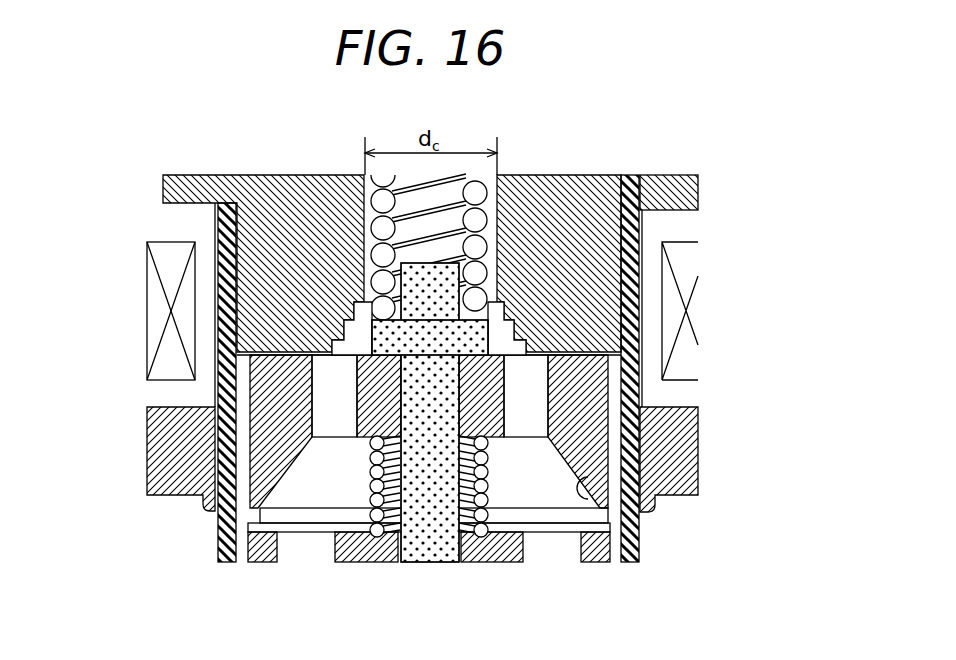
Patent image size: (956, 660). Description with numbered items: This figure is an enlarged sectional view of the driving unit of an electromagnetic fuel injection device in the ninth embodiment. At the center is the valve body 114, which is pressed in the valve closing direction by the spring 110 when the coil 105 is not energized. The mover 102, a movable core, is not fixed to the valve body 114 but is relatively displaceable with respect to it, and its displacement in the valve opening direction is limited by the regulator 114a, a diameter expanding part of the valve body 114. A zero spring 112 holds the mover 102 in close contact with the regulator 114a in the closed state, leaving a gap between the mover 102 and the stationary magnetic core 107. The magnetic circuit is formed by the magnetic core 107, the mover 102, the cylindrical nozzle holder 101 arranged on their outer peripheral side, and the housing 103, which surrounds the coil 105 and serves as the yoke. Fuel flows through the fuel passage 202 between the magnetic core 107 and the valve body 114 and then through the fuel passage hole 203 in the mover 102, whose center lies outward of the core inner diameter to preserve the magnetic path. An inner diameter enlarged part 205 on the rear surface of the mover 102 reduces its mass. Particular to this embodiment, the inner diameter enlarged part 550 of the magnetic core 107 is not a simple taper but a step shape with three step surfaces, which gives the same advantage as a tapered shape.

The inner diameter enlarged part 550 is at (338, 332).
The spring 110 is at (476, 220).
The magnetic core 107 is at (587, 210).
The regulator 114a is at (473, 337).
The fuel passage 202 is at (492, 323).
The fuel passage hole 203 is at (525, 383).
The inner diameter enlarged part 205 is at (597, 497).
The zero spring 112 is at (480, 508).
The valve body 114 is at (423, 550).
The mover 102 is at (307, 410).
The nozzle holder 101 is at (218, 537).
The housing 103 is at (165, 453).
The coil 105 is at (165, 371).